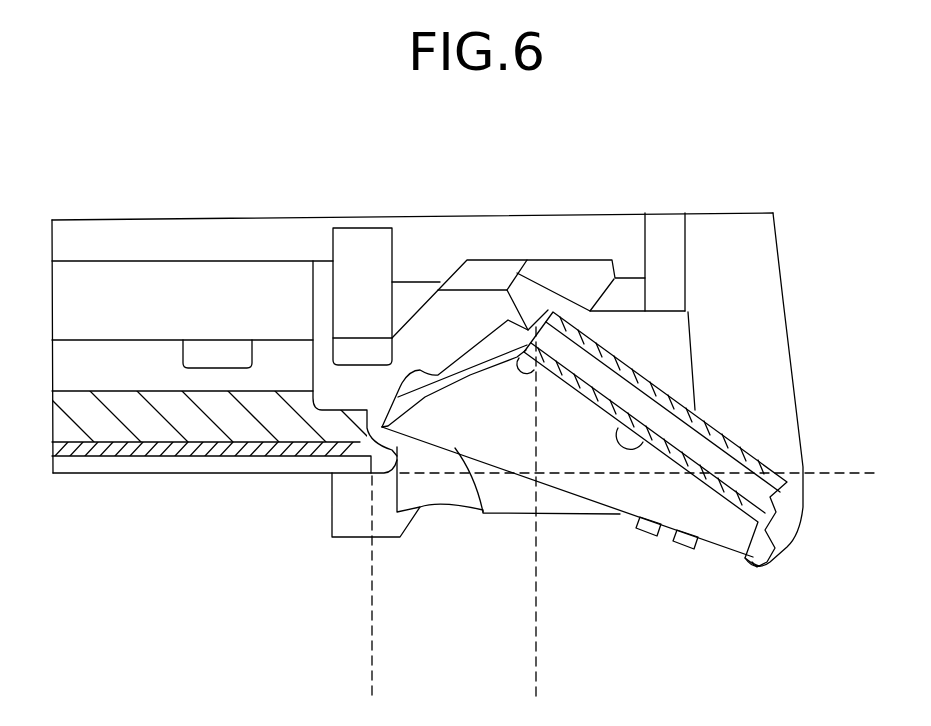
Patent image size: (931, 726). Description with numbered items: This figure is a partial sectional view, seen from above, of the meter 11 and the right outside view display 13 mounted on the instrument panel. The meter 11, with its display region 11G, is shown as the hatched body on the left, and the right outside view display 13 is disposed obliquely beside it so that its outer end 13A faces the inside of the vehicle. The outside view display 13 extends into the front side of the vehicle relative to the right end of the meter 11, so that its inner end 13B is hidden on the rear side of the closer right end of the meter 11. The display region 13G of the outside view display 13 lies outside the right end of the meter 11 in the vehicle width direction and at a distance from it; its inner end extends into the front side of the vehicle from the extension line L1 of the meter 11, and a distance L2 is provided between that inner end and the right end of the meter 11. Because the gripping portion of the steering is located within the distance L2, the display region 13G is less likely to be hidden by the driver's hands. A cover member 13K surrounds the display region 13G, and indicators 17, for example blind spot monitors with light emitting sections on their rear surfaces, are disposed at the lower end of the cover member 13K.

The meter 11 is at (240, 480).
The display region 11G is at (122, 476).
The right outside view display 13 is at (680, 513).
The outer end 13A is at (746, 552).
The inner end 13B is at (402, 400).
The display region 13G is at (648, 440).
The cover member 13K is at (485, 410).
The indicators 17 is at (683, 543).
The extension line L1 is at (845, 470).
The distance L2 is at (536, 682).